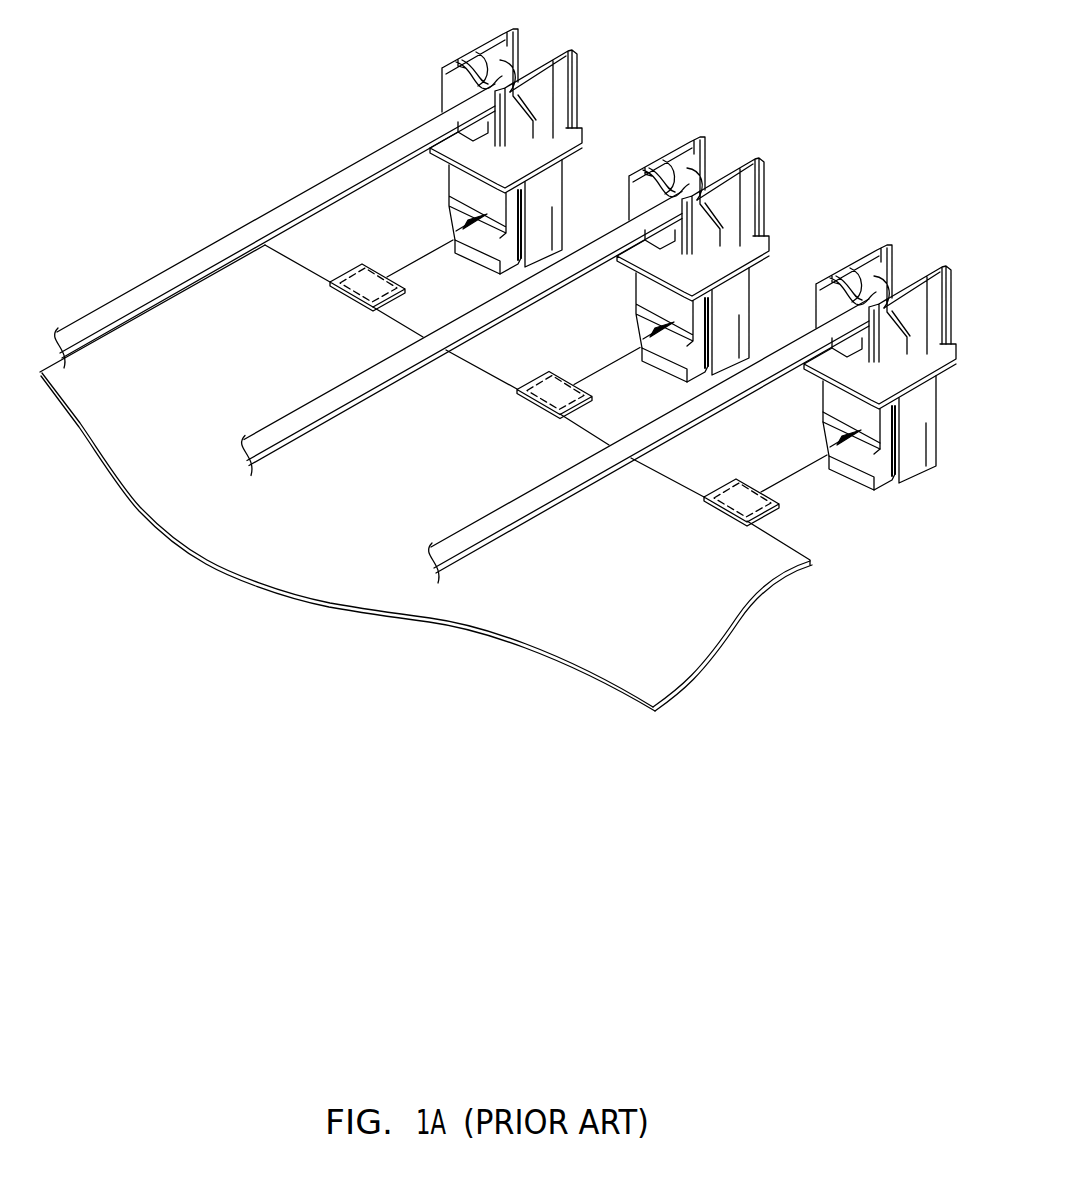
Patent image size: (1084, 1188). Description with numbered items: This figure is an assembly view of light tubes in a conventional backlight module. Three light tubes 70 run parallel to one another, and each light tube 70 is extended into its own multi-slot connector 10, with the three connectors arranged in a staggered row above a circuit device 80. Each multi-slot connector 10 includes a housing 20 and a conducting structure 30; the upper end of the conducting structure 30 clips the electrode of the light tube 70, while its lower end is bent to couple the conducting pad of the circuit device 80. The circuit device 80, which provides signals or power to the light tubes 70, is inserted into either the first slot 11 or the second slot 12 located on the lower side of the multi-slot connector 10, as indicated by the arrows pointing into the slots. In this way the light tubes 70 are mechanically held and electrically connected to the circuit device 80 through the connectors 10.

The multi-slot connector 10 is at (557, 85).
The first slot 11 is at (867, 496).
The second slot 12 is at (847, 537).
The housing 20 is at (548, 91).
The conducting structure 30 is at (500, 62).
The light tube 70 is at (305, 203).
The circuit device 80 is at (570, 630).